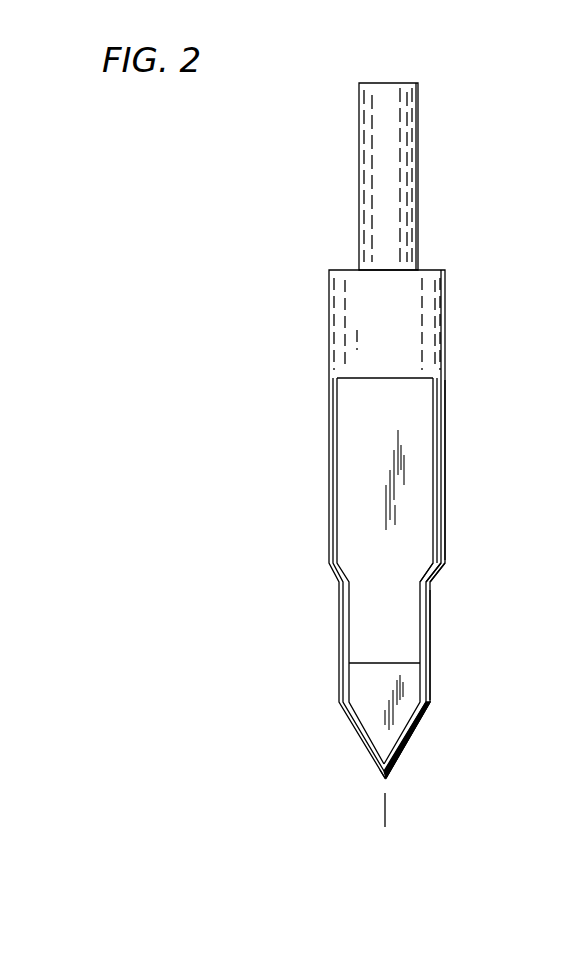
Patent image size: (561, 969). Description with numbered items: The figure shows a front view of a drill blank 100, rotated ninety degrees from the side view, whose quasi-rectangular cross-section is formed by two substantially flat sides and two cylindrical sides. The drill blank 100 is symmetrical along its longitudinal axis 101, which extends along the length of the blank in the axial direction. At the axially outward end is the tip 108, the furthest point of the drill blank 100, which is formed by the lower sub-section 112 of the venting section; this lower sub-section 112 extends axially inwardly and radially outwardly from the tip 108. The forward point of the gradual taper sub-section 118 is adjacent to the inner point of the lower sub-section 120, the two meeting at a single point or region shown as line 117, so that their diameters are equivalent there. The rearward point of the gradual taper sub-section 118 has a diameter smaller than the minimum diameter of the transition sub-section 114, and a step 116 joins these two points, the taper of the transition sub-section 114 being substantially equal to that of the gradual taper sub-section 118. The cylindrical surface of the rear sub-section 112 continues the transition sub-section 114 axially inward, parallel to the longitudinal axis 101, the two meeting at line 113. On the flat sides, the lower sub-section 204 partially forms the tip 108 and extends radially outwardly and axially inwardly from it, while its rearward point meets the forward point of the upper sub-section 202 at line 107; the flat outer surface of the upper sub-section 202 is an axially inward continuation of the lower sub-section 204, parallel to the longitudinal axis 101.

The drill blank 100 is at (258, 230).
The longitudinal axis 101 is at (385, 827).
The line 107 is at (428, 664).
The tip 108 is at (383, 778).
The lower sub-section 112 is at (445, 462).
The line 113 is at (445, 564).
The transition sub-section 114 is at (437, 573).
The step 116 is at (433, 587).
The line 117 is at (430, 701).
The gradual taper sub-section 118 is at (433, 631).
The lower sub-section 120 is at (440, 377).
The upper sub-section 202 is at (363, 479).
The lower sub-section 204 is at (363, 682).